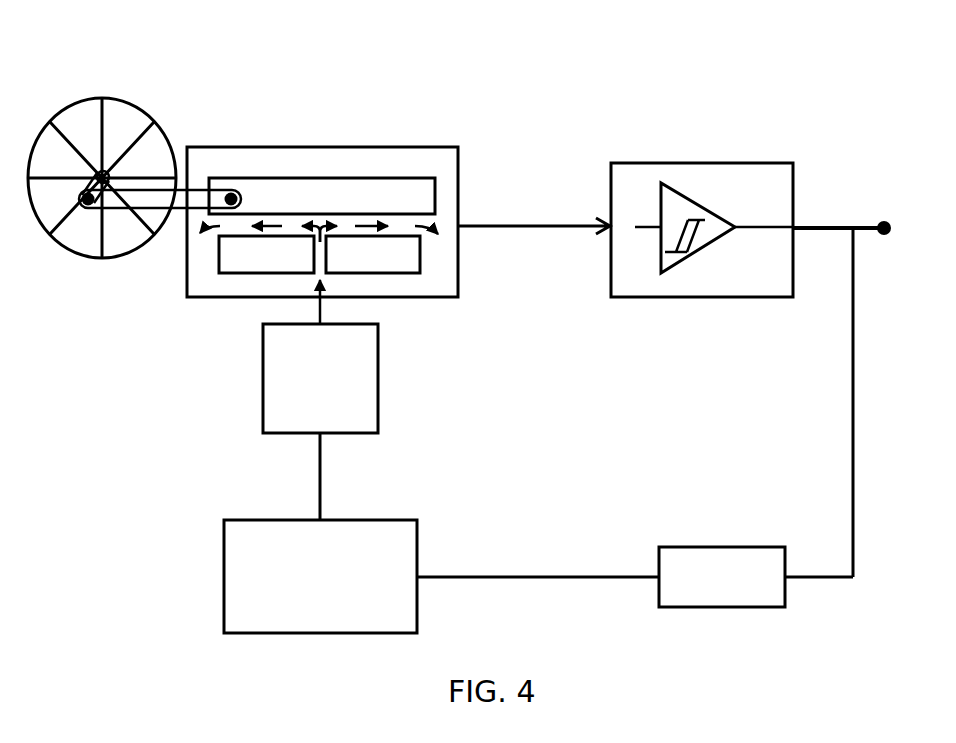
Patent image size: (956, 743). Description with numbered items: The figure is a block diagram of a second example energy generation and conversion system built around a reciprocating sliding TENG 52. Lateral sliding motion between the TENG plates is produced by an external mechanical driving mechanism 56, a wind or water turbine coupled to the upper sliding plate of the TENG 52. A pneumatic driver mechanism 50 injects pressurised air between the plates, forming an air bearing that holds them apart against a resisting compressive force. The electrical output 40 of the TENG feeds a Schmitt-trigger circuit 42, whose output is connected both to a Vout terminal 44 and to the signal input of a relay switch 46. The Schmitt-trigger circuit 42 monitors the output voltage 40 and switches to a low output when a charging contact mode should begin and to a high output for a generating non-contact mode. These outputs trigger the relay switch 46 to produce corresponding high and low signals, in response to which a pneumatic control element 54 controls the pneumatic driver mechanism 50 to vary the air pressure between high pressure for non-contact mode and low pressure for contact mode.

The electrical output 40 is at (547, 218).
The Schmitt-trigger circuit 42 is at (705, 163).
The Vout terminal 44 is at (885, 221).
The relay switch 46 is at (745, 607).
The pneumatic driver mechanism 50 is at (263, 376).
The reciprocating sliding TENG 52 is at (341, 147).
The pneumatic control element 54 is at (224, 543).
The external mechanical driving mechanism 56 is at (90, 98).